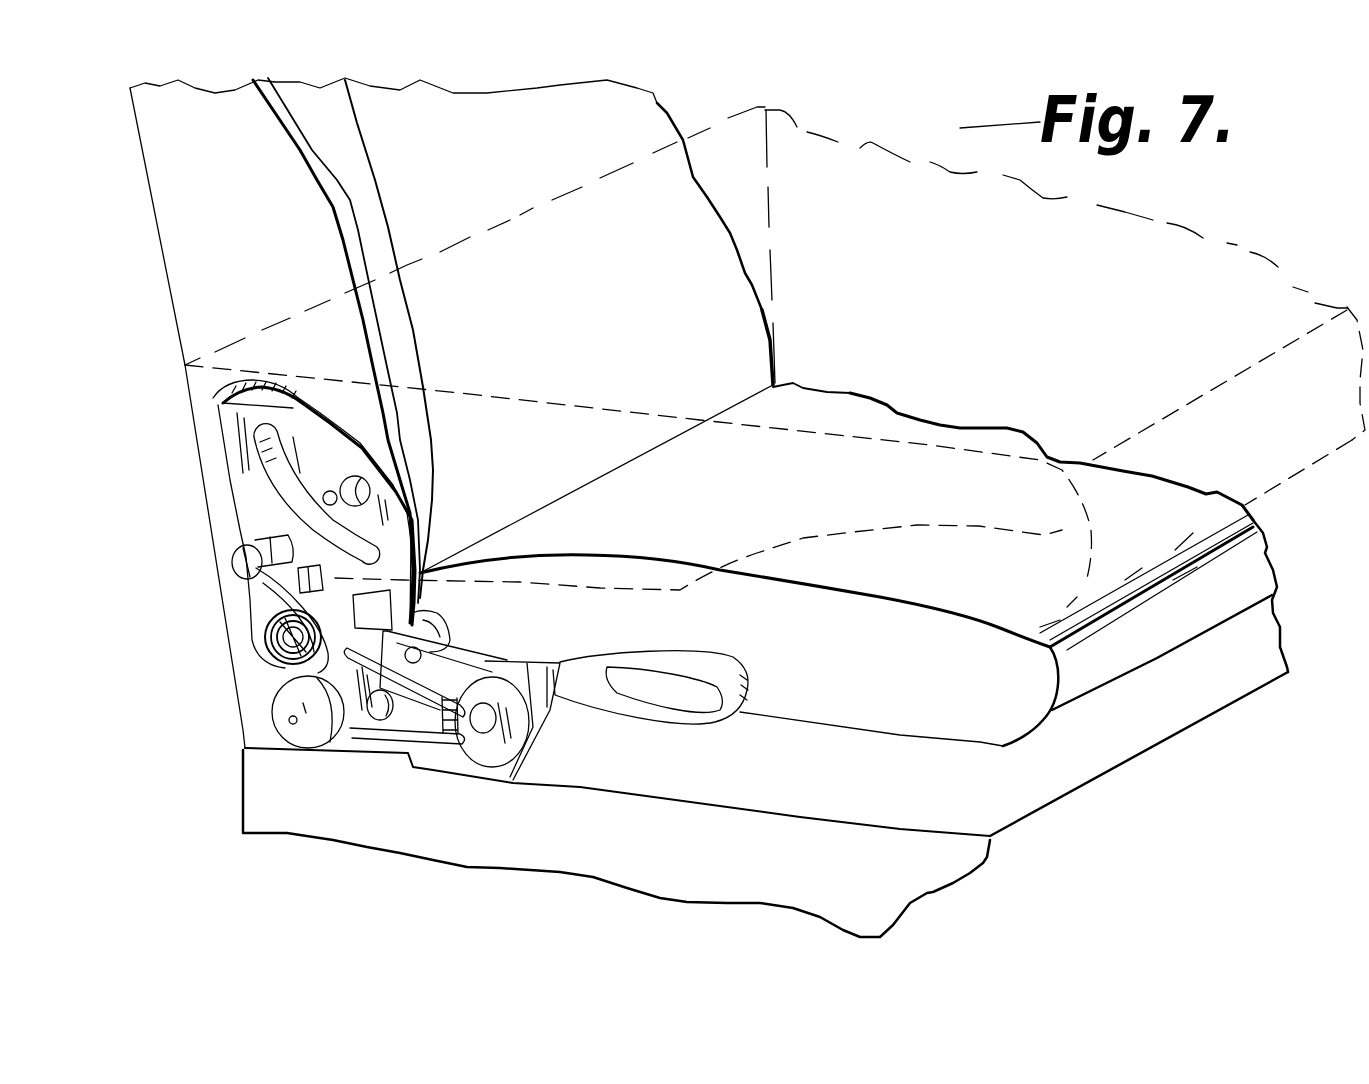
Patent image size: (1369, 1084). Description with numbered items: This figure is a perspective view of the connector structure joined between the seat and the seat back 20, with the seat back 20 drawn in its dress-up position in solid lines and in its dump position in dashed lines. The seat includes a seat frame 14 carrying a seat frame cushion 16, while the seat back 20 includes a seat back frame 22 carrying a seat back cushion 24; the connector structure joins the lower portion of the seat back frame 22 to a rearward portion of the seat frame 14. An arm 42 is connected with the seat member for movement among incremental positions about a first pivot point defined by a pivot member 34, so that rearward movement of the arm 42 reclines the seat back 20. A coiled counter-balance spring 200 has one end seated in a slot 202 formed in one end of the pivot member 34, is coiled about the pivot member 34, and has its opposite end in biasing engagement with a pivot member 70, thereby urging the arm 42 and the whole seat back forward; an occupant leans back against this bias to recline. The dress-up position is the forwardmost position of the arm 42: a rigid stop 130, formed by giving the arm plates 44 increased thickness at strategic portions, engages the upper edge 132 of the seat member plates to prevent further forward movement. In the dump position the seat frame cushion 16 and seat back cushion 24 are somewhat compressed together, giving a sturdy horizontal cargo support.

The seat frame 14 is at (970, 796).
The seat frame cushion 16 is at (1027, 687).
The seat back 20 is at (162, 248).
The seat back frame 22 is at (192, 195).
The seat back cushion 24 is at (310, 112).
The pivot member 34 is at (280, 636).
The arm 42 is at (238, 500).
The arm plates 44 is at (250, 404).
The pivot member 70 is at (233, 563).
The rigid stop 130 is at (392, 618).
The upper edge 132 is at (373, 627).
The coiled counter-balance spring 200 is at (282, 592).
The slot 202 is at (377, 602).